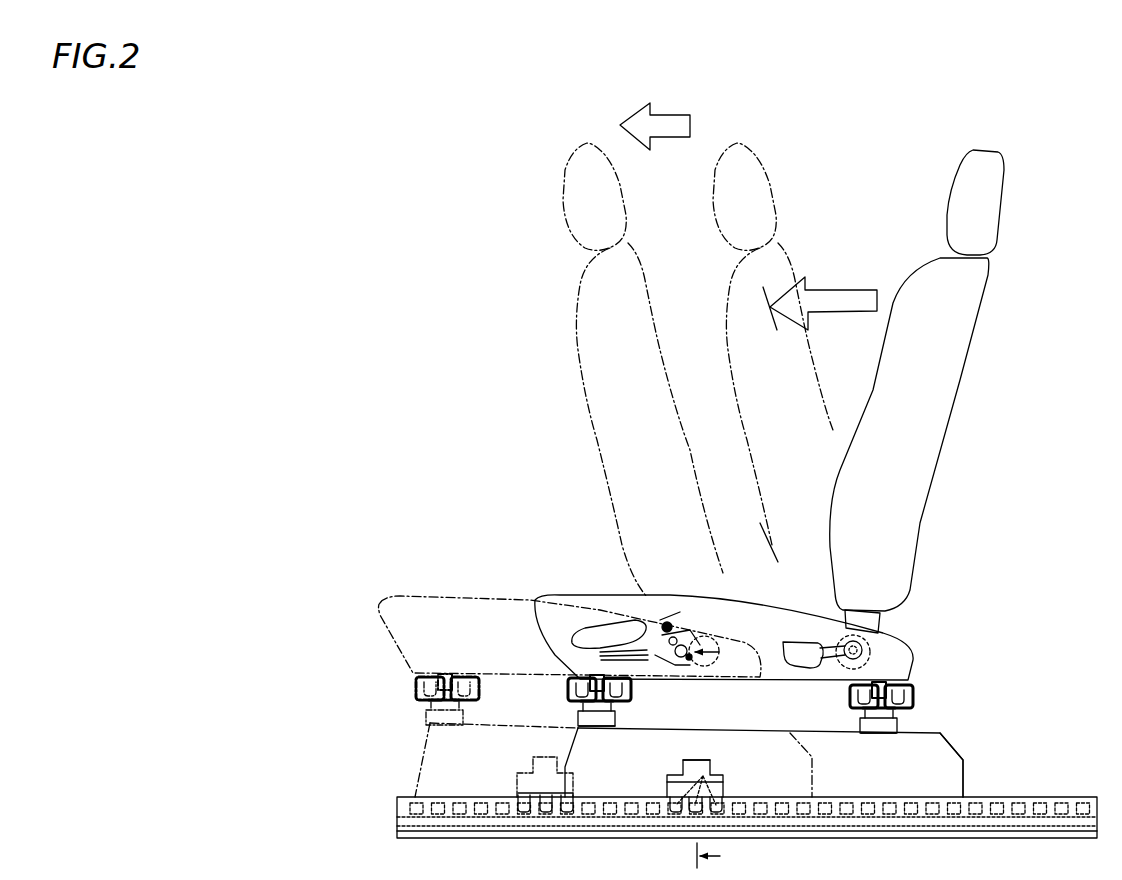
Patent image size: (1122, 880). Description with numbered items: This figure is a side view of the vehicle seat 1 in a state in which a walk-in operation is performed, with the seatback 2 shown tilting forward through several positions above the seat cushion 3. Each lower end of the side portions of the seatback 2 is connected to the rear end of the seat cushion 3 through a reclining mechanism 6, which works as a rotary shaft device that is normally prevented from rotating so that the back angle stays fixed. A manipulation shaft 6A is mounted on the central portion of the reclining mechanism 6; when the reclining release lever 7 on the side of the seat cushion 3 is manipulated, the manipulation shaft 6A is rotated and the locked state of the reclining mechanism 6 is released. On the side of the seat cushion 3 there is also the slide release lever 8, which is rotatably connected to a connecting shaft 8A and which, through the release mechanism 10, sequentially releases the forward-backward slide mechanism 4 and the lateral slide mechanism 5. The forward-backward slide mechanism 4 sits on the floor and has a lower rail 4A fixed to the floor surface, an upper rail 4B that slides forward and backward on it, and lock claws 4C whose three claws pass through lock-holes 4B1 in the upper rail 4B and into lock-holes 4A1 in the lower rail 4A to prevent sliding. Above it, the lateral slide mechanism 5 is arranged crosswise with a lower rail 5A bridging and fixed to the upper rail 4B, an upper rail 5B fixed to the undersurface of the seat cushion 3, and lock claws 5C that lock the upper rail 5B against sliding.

The vehicle seat 1 is at (1037, 222).
The seatback 2 is at (635, 324).
The seat cushion 3 is at (452, 600).
The forward-backward slide mechanism 4 is at (1074, 796).
The lower rail 4A is at (987, 797).
The lock-holes 4A1 is at (888, 801).
The upper rail 4B is at (940, 756).
The lock-holes 4B1 is at (703, 776).
The lock claws 4C is at (668, 786).
The lateral slide mechanism 5 is at (910, 686).
The lower rail 5A is at (897, 712).
The upper rail 5B is at (910, 700).
The lock claws 5C is at (664, 703).
The reclining mechanism 6 is at (867, 637).
The manipulation shaft 6A is at (870, 653).
The reclining release lever 7 is at (803, 642).
The slide release lever 8 is at (585, 636).
The connecting shaft 8A is at (663, 637).
The release mechanism 10 is at (700, 625).